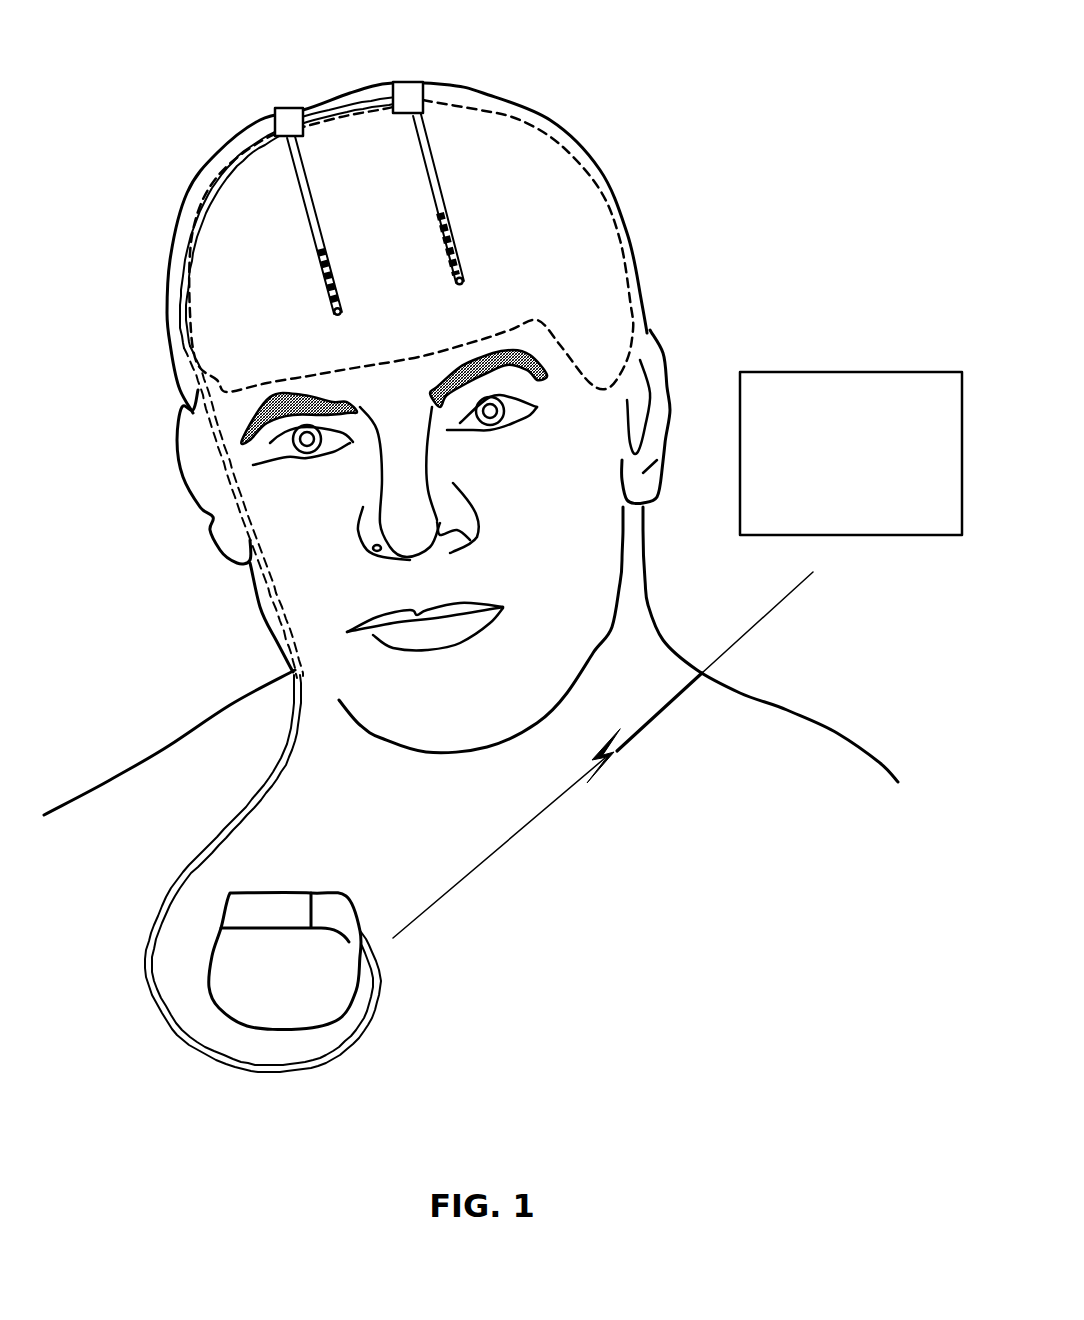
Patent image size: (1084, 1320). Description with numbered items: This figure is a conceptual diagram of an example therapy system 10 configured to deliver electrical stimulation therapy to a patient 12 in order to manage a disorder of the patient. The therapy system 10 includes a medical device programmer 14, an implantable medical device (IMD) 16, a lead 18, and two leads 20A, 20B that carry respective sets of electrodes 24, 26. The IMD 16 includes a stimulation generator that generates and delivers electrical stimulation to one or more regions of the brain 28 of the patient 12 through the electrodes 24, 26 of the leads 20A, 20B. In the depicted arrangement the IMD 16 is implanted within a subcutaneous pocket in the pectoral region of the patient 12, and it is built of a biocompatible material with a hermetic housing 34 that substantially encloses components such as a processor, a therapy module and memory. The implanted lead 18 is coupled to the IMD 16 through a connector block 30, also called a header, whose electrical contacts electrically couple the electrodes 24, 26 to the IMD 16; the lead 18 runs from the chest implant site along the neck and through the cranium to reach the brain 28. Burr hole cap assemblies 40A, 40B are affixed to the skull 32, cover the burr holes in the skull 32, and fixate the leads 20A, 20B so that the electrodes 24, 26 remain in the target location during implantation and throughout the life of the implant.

The therapy system 10 is at (777, 76).
The patient 12 is at (125, 766).
The medical device programmer 14 is at (851, 453).
The implantable medical device 16 is at (341, 868).
The lead 18 is at (248, 801).
The lead 20A is at (328, 226).
The lead 20B is at (455, 202).
The electrodes 24 is at (322, 252).
The electrodes 26 is at (455, 213).
The brain 28 is at (620, 240).
The connector block 30 is at (360, 919).
The skull 32 is at (645, 303).
The hermetic housing 34 is at (212, 952).
The burr hole cap assembly 40A is at (286, 108).
The burr hole cap assembly 40B is at (407, 82).